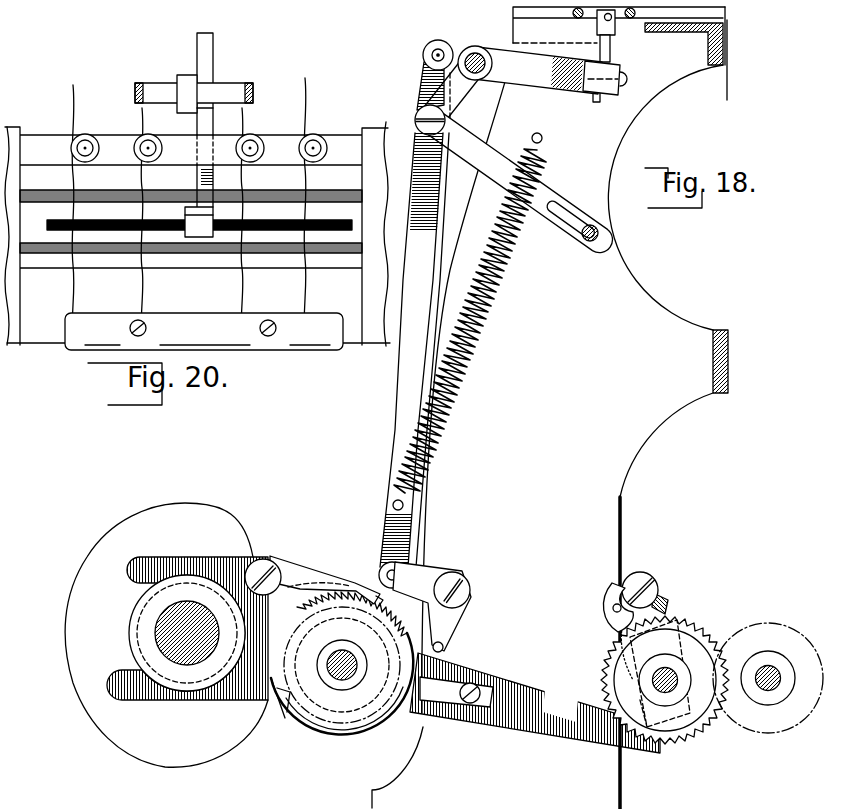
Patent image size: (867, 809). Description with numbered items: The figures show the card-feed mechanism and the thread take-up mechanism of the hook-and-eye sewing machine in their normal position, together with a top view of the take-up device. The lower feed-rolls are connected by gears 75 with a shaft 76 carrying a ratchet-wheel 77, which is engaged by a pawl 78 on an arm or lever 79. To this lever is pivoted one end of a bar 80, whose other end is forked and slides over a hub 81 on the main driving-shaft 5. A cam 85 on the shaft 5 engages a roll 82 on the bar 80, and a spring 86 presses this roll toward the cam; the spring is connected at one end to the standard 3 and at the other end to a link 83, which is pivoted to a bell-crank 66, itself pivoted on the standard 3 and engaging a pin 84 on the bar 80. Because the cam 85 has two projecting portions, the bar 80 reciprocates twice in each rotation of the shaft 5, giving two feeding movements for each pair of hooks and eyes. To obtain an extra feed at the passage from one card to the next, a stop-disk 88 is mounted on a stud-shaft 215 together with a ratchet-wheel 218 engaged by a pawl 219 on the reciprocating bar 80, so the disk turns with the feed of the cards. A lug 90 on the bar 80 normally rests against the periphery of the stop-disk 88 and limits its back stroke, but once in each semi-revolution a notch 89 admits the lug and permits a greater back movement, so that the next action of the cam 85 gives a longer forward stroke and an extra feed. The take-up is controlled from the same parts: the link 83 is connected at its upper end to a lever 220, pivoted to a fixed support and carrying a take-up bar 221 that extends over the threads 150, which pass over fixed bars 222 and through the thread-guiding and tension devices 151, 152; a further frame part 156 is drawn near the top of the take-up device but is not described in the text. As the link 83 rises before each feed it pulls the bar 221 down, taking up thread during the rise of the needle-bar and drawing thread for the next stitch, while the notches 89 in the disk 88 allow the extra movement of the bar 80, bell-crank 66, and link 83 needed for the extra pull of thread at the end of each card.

In FIG. 18, the standard 3 is at (575, 408).
In FIG. 18, the main driving-shaft 5 is at (190, 663).
In FIG. 18, the bell-crank 66 is at (430, 572).
In FIG. 18, the gears 75 is at (787, 728).
In FIG. 18, the shaft 76 is at (673, 667).
In FIG. 18, the ratchet-wheel 77 is at (690, 620).
In FIG. 18, the pawl 78 is at (607, 608).
In FIG. 18, the arm or lever 79 is at (660, 594).
In FIG. 18, the bar 80 is at (528, 681).
In FIG. 18, the hub 81 is at (135, 620).
In FIG. 18, the roll 82 is at (314, 683).
In FIG. 18, the link 83 is at (397, 430).
In FIG. 18, the pin 84 is at (445, 645).
In FIG. 18, the cam 85 is at (230, 745).
In FIG. 18, the spring 86 is at (470, 347).
In FIG. 18, the stop-disk 88 is at (375, 728).
In FIG. 18, the notches 89 is at (285, 733).
In FIG. 18, the lug 90 is at (462, 668).
In FIG. 20, the threads 150 is at (304, 112).
In FIG. 20, the thread-guiding and tension devices 151 is at (261, 313).
In FIG. 20, the thread-guiding and tension devices 152 is at (91, 135).
In FIG. 18, the frame bar 156 is at (513, 14).
In FIG. 18, the stud-shaft 215 is at (343, 690).
In FIG. 18, the ratchet-wheel 218 is at (383, 598).
In FIG. 18, the pawl 219 is at (330, 580).
In FIG. 20, the lever 220 is at (197, 174).
In FIG. 18, the lever 220 is at (541, 72).
In FIG. 20, the take-up bar 221 is at (333, 232).
In FIG. 18, the take-up bar 221 is at (616, 27).
In FIG. 20, the fixed bars 222 is at (282, 185).
In FIG. 18, the fixed bars 222 is at (575, 17).